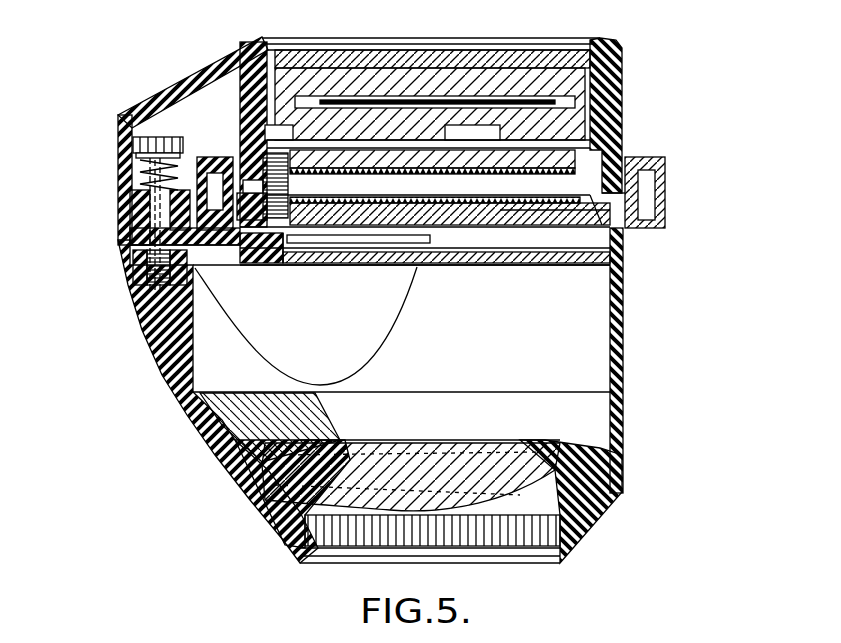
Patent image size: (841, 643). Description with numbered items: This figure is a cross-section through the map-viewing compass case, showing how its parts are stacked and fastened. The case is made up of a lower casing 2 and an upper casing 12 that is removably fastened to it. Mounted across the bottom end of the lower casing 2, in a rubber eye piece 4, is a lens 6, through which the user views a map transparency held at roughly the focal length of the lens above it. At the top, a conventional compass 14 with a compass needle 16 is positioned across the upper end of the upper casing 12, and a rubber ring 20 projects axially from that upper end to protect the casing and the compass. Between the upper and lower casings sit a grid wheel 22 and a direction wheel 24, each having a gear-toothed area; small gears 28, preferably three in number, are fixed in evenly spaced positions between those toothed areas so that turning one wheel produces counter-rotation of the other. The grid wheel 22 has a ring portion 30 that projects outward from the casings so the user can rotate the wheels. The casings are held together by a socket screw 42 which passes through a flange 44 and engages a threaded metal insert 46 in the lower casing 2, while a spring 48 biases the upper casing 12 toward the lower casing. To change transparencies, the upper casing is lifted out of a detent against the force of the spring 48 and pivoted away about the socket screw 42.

The lower casing 2 is at (623, 308).
The rubber eye piece 4 is at (594, 520).
The lens 6 is at (460, 456).
The upper casing 12 is at (195, 72).
The compass 14 is at (556, 118).
The compass needle 16 is at (556, 97).
The rubber ring 20 is at (605, 40).
The grid wheel 22 is at (452, 228).
The direction wheel 24 is at (505, 185).
The small gears 28 is at (246, 136).
The ring portion 30 is at (665, 172).
The socket screw 42 is at (155, 138).
The flange 44 is at (137, 212).
The threaded metal insert 46 is at (135, 277).
The spring 48 is at (150, 175).